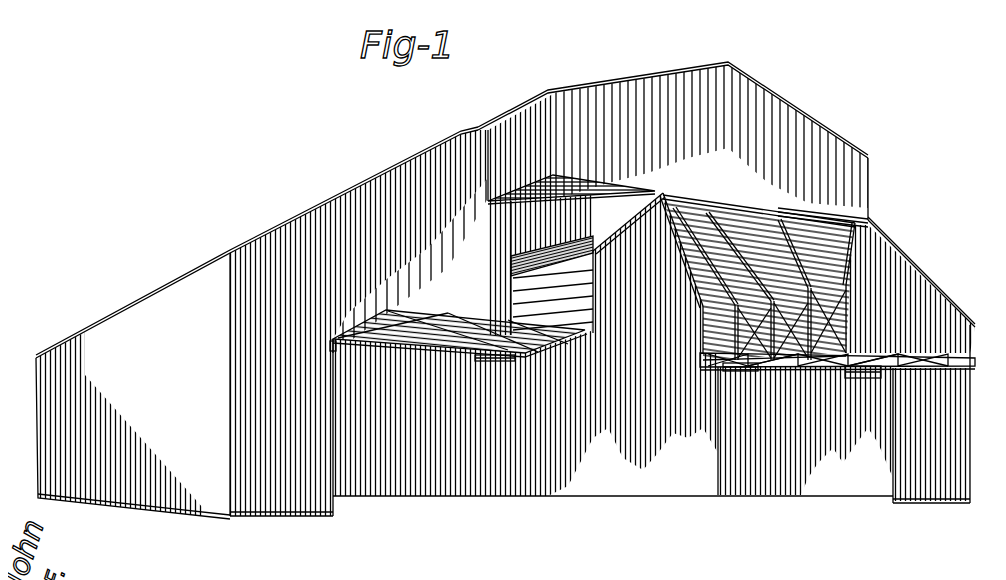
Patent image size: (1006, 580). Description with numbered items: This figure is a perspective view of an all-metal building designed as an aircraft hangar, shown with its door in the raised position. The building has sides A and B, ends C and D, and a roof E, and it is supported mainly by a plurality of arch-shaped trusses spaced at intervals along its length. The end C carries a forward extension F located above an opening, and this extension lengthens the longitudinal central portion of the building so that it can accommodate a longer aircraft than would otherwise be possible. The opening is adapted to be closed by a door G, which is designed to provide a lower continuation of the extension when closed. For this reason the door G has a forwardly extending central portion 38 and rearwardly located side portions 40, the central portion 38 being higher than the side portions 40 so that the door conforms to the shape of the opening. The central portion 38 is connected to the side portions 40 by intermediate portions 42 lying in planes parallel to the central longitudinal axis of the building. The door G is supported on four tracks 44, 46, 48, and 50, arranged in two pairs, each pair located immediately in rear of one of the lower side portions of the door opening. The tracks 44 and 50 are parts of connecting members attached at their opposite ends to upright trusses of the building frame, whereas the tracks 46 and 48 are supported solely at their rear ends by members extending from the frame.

The central portion 38 is at (738, 176).
The side portions 40 is at (375, 308).
The intermediate portions 42 is at (505, 290).
The track 44 is at (325, 338).
The track 46 is at (512, 352).
The track 48 is at (752, 352).
The track 50 is at (873, 368).
The side A is at (128, 496).
The side B is at (865, 490).
The end C is at (247, 500).
The end D is at (358, 490).
The roof E is at (312, 198).
The forward extension F is at (790, 128).
The door G is at (675, 377).